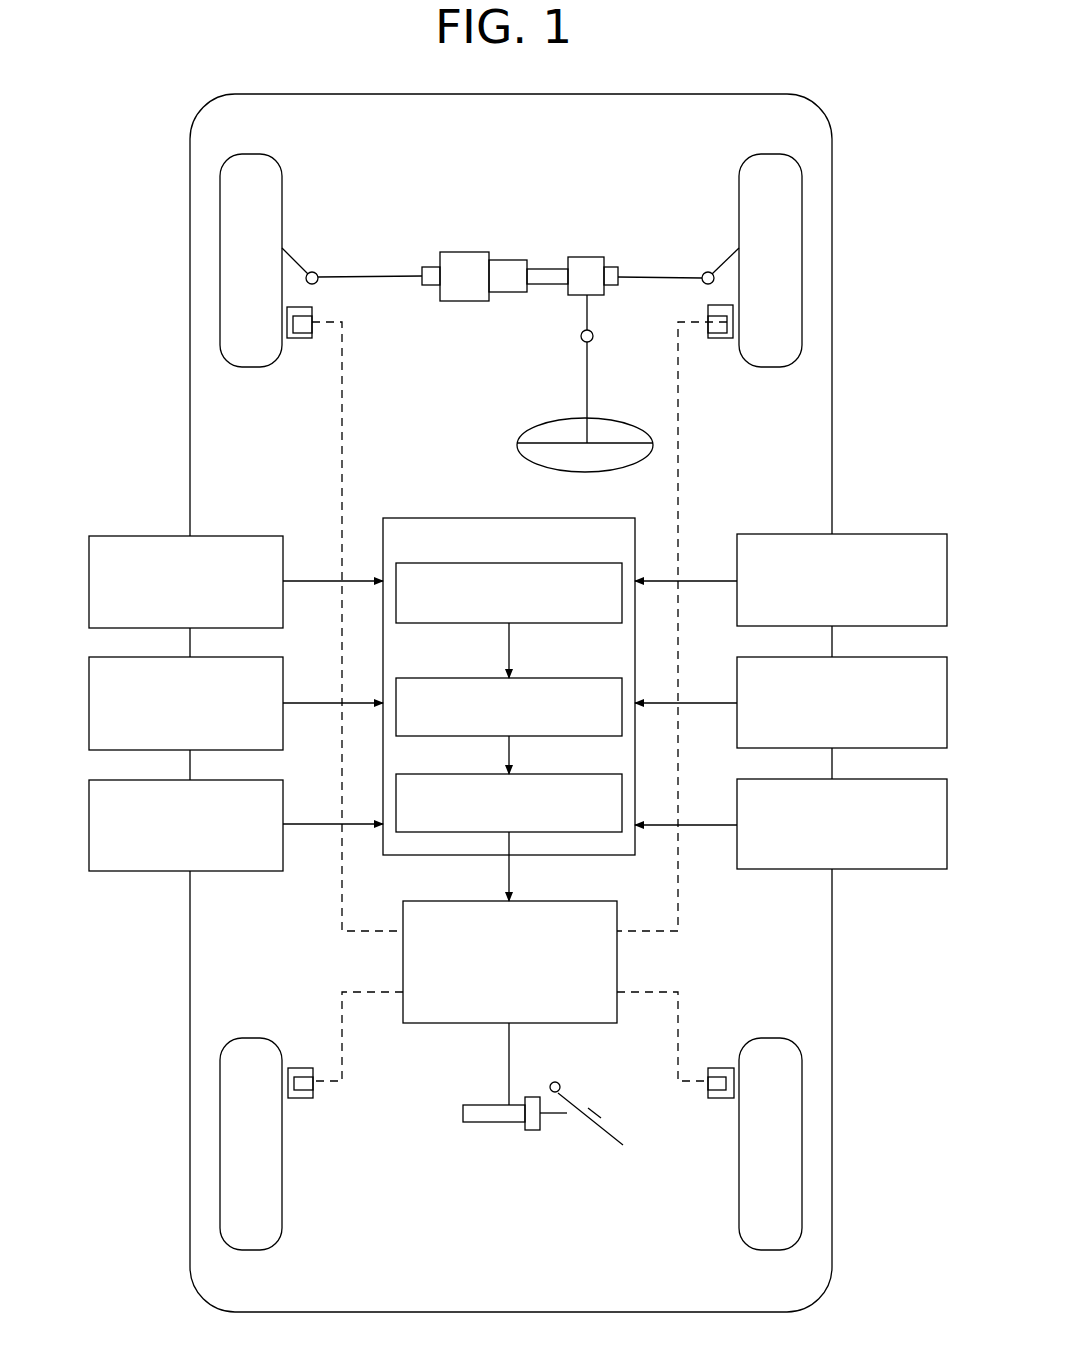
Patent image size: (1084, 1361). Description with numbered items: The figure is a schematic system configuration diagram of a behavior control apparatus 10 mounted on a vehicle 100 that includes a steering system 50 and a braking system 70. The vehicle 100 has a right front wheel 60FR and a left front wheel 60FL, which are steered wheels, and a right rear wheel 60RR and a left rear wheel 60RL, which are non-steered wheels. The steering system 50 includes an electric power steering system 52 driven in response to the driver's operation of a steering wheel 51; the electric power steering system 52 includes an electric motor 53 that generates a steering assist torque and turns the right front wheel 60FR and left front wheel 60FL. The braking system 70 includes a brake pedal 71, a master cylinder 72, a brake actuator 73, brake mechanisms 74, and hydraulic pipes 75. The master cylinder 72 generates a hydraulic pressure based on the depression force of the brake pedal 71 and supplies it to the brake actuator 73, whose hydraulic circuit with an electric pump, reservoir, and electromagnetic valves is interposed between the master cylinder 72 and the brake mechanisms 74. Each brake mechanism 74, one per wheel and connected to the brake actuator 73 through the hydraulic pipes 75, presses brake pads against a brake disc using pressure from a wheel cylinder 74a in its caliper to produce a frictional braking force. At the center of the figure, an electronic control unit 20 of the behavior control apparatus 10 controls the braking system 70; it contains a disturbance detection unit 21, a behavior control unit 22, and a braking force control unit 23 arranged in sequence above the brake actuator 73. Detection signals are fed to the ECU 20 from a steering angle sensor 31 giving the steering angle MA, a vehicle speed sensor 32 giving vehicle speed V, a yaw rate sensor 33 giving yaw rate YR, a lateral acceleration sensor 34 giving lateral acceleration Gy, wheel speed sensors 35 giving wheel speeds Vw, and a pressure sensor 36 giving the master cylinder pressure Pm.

The vehicle 100 is at (832, 187).
The behavior control apparatus 10 is at (740, 488).
The electronic control unit (ECU) 20 is at (509, 661).
The disturbance detection unit 21 is at (565, 563).
The behavior control unit 22 is at (565, 678).
The braking force control unit 23 is at (565, 774).
The steering angle sensor 31 is at (147, 536).
The vehicle speed sensor 32 is at (89, 707).
The yaw rate sensor 33 is at (142, 872).
The lateral acceleration sensor 34 is at (865, 534).
The wheel speed sensor 35 is at (737, 670).
The pressure sensor 36 is at (895, 870).
The steering system 50 is at (510, 311).
The steering wheel 51 is at (552, 420).
The electric power steering system 52 is at (482, 327).
The electric motor 53 is at (463, 252).
The left front wheel 60FL is at (220, 263).
The right front wheel 60FR is at (803, 262).
The left rear wheel 60RL is at (220, 1157).
The right rear wheel 60RR is at (802, 1147).
The braking system 70 is at (511, 1021).
The brake pedal 71 is at (592, 1120).
The master cylinder 72 is at (488, 1105).
The brake actuator 73 is at (555, 901).
The brake mechanism 74 is at (315, 311).
The wheel cylinder 74a is at (310, 337).
The hydraulic pipe 75 is at (342, 480).